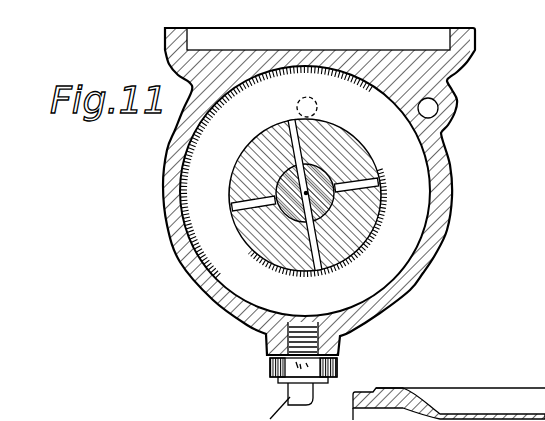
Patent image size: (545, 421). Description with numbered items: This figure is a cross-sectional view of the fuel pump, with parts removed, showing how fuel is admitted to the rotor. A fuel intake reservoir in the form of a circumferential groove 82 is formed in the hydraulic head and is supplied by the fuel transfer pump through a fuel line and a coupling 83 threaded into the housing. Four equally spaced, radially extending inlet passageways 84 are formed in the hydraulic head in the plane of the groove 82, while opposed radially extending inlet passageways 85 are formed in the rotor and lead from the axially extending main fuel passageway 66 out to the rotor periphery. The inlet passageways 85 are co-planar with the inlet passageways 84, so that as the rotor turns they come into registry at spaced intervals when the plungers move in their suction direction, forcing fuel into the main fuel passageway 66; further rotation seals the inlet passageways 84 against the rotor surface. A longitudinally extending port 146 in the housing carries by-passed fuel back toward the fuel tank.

The circumferential groove 82 is at (397, 244).
The coupling 83 is at (280, 361).
The inlet passageways 84 is at (341, 207).
The inlet passageways 85 is at (338, 180).
The main fuel passageway 66 is at (342, 192).
The longitudinally extending port 146 is at (439, 101).